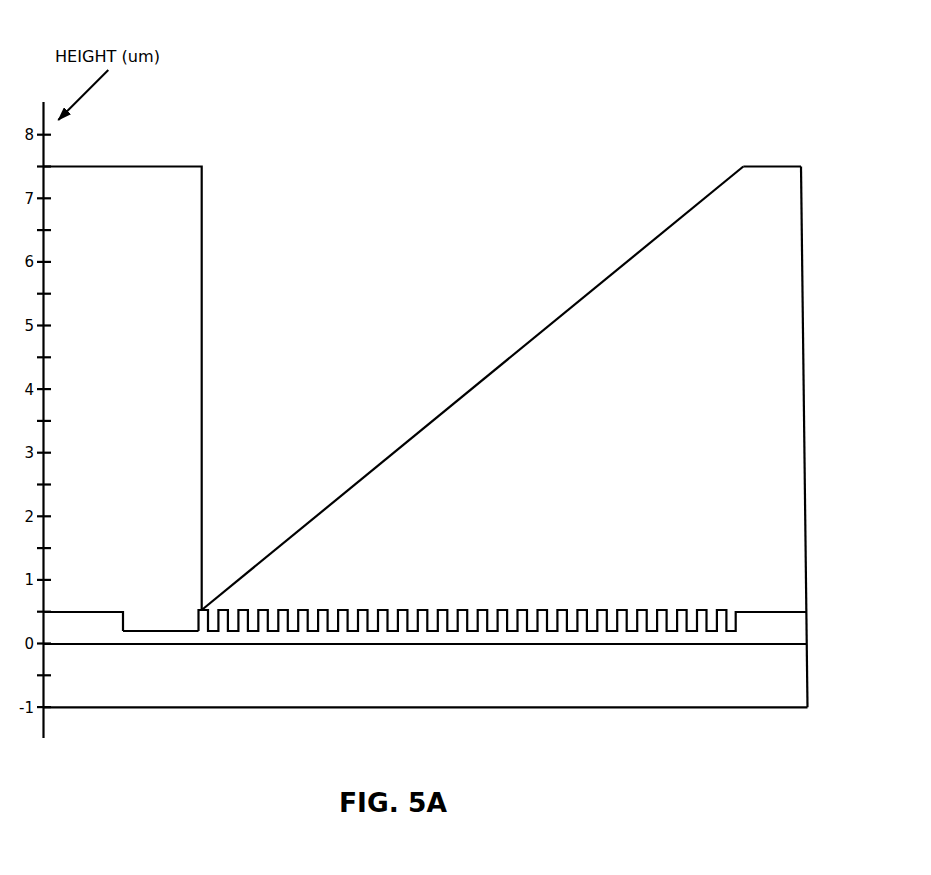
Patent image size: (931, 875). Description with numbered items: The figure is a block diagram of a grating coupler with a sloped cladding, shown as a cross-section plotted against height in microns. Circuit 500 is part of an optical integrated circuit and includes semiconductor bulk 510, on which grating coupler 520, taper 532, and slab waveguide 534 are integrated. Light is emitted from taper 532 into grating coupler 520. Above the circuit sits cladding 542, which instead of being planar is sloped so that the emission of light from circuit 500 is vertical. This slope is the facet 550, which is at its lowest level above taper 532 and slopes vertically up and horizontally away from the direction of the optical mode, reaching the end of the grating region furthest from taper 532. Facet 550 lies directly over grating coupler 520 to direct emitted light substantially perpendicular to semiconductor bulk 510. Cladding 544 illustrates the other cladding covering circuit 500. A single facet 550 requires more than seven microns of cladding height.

The circuit 500 is at (426, 369).
The semiconductor bulk 510 is at (426, 437).
The grating coupler 520 is at (507, 608).
The taper 532 is at (95, 617).
The slab waveguide 534 is at (158, 630).
The cladding 542 is at (205, 262).
The cladding 544 is at (698, 262).
The facet 550 is at (522, 357).